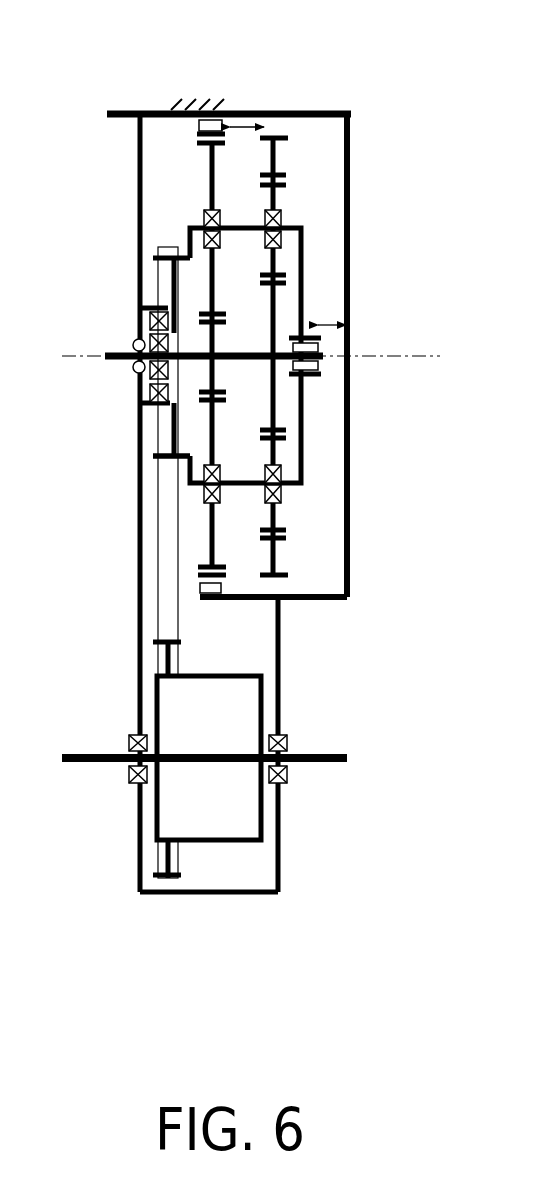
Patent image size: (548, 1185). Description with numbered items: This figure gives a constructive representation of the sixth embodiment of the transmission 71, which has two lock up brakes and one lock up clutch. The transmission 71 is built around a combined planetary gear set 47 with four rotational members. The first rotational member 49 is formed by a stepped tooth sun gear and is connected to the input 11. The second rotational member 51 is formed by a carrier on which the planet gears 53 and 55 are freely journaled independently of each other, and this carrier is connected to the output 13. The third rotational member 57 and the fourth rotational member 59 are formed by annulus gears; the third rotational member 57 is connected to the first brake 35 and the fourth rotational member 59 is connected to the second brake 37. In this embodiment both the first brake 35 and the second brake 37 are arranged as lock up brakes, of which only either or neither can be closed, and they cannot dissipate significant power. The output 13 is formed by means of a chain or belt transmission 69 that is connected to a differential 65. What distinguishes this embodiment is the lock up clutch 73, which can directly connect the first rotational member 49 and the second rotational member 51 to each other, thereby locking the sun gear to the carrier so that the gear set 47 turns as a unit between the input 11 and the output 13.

The input 11 is at (115, 353).
The output 13 is at (157, 458).
The first brake 35 is at (284, 111).
The second brake 37 is at (200, 109).
The combined planetary gear set 47 is at (188, 184).
The first rotational member 49 is at (270, 400).
The second rotational member 51 is at (172, 273).
The planet gear 53 is at (268, 260).
The planet gear 55 is at (208, 198).
The third rotational member 57 is at (278, 160).
The fourth rotational member 59 is at (224, 131).
The differential 65 is at (221, 806).
The chain or belt transmission 69 is at (172, 569).
The transmission 71 is at (325, 618).
The lock up clutch 73 is at (329, 377).